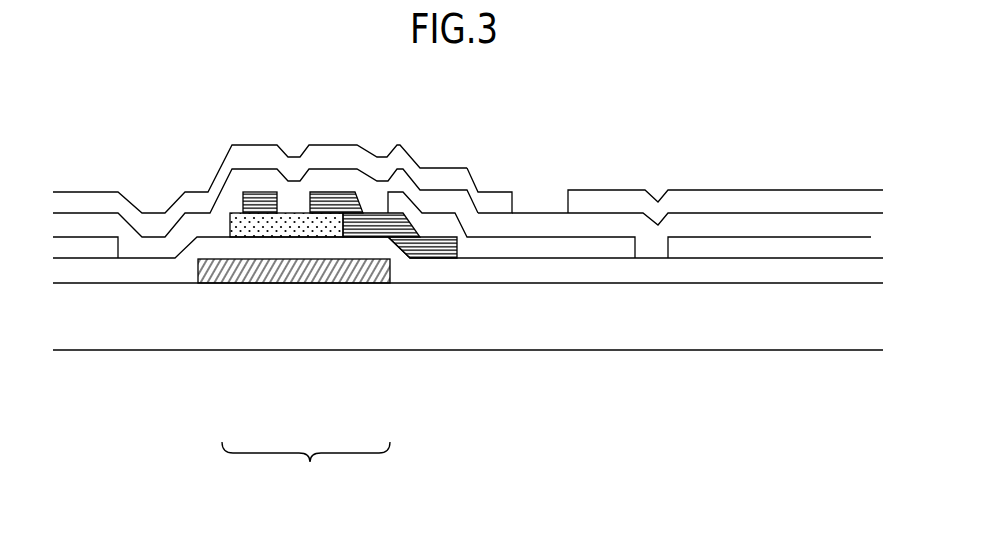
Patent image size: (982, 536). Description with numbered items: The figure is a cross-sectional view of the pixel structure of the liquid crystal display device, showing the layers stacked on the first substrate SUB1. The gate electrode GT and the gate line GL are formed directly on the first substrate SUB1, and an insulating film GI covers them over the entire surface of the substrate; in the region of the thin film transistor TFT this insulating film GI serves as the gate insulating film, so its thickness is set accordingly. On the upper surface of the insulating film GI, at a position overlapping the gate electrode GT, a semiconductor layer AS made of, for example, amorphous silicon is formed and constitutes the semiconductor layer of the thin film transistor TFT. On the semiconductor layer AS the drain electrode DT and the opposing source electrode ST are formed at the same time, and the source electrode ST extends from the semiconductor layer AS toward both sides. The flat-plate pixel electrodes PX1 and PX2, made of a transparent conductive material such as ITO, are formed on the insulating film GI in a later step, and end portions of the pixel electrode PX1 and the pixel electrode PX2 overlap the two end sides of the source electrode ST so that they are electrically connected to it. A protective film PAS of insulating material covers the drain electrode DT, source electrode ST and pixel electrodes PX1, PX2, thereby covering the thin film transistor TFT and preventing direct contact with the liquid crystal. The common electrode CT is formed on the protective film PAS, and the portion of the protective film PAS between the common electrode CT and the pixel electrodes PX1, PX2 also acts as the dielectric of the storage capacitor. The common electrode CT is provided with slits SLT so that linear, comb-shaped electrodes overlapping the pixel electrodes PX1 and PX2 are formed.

The first substrate SUB1 is at (153, 328).
The gate line GL is at (205, 283).
The gate electrode GT is at (290, 267).
The insulating film GI is at (410, 270).
The semiconductor layer AS is at (312, 225).
The drain electrode DT is at (252, 195).
The source electrode ST is at (322, 195).
The pixel electrode PX1 is at (568, 245).
The pixel electrode PX2 is at (818, 390).
The protective film PAS is at (187, 237).
The common electrode CT is at (726, 203).
The slit SLT is at (533, 202).
The thin film transistor TFT is at (337, 280).